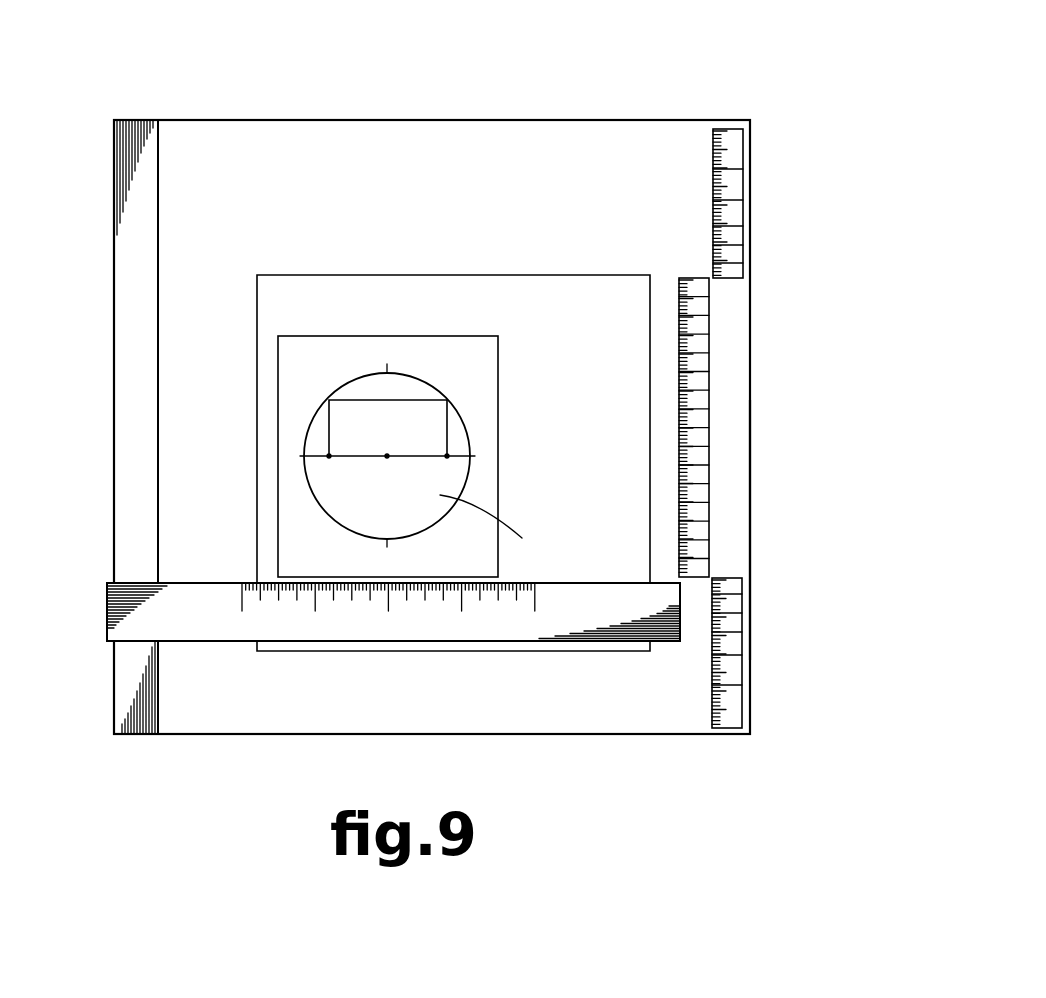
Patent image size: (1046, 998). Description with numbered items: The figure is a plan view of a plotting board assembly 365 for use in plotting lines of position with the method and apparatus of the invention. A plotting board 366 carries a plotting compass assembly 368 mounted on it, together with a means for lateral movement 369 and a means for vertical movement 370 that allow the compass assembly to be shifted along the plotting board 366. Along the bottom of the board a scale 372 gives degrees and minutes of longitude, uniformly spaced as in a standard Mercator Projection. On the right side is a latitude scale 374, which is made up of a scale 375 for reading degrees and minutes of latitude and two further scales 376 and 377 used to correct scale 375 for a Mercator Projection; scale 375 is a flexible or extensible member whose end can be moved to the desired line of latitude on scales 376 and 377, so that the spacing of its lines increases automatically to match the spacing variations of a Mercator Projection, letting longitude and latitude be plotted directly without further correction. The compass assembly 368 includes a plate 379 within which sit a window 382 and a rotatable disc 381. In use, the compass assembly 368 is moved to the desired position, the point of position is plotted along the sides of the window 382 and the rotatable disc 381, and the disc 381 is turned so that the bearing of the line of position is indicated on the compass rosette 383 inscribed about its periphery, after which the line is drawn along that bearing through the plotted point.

The plotting board assembly 365 is at (624, 92).
The plotting board 366 is at (260, 120).
The plotting compass assembly 368 is at (330, 335).
The means for lateral movement 369 is at (138, 625).
The means for vertical movement 370 is at (127, 530).
The scale 372 is at (440, 608).
The latitude scale 374 is at (752, 529).
The scale 375 is at (709, 395).
The scale 376 is at (743, 217).
The scale 377 is at (742, 667).
The template holder plate 379 is at (508, 284).
The rotatable disc 381 is at (506, 524).
The window 382 is at (435, 433).
The compass rosette 383 is at (430, 383).